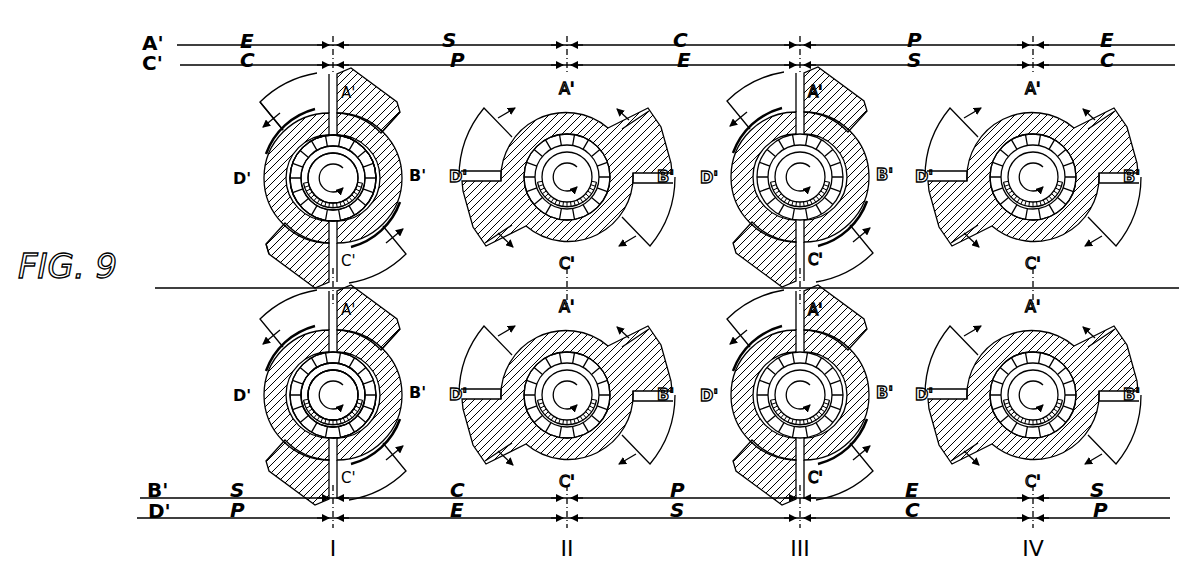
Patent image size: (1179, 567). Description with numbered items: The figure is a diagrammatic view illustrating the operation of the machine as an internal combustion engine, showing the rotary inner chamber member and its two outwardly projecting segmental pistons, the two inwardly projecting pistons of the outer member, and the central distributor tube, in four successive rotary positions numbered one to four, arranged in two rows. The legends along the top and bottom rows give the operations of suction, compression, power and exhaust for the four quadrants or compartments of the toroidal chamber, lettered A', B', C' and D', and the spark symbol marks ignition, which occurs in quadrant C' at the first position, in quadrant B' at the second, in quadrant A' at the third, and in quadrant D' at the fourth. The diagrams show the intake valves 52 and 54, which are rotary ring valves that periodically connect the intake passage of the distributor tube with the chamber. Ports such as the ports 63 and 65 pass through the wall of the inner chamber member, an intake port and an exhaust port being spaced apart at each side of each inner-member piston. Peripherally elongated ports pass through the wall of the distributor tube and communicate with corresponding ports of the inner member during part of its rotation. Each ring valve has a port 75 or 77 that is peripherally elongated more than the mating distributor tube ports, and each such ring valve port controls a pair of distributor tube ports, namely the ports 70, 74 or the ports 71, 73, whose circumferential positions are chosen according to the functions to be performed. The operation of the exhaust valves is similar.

The intake valve 52 is at (291, 178).
The intake valve 54 is at (285, 382).
The port 63 is at (259, 131).
The port 65 is at (249, 178).
The distributor tube port 70 is at (404, 125).
The distributor tube port 71 is at (410, 350).
The distributor tube port 73 is at (285, 398).
The distributor tube port 74 is at (392, 224).
The ring valve port 75 is at (382, 156).
The ring valve port 77 is at (382, 416).